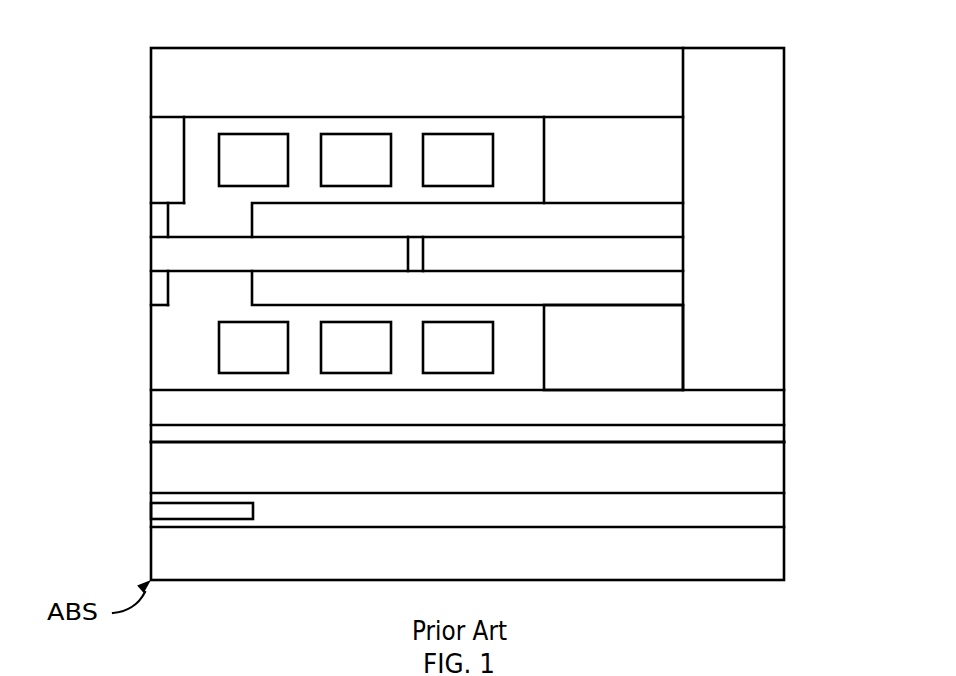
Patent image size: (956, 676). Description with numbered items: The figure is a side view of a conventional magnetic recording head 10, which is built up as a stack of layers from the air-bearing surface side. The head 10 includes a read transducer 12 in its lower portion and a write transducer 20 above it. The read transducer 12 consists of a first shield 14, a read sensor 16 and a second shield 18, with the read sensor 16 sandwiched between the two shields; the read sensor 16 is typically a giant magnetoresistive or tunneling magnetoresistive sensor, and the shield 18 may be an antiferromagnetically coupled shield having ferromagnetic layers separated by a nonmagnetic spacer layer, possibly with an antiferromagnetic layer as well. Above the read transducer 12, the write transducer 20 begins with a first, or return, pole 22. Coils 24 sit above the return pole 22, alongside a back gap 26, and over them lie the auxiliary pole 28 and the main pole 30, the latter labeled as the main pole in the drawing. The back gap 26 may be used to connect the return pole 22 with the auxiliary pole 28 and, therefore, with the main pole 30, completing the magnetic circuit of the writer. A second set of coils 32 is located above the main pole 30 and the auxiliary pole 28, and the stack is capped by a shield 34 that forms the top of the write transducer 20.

The conventional magnetic recording head 10 is at (98, 42).
The read transducer 12 is at (408, 511).
The shield 14 is at (492, 532).
The read sensor 16 is at (177, 538).
The shield 18 is at (492, 452).
The write transducer 20 is at (408, 219).
The return pole 22 is at (443, 431).
The coils 24 is at (297, 332).
The back gap 26 is at (689, 347).
The auxiliary pole 28 is at (492, 254).
The main pole 30 is at (392, 230).
The coils 32 is at (323, 145).
The shield 34 is at (492, 213).